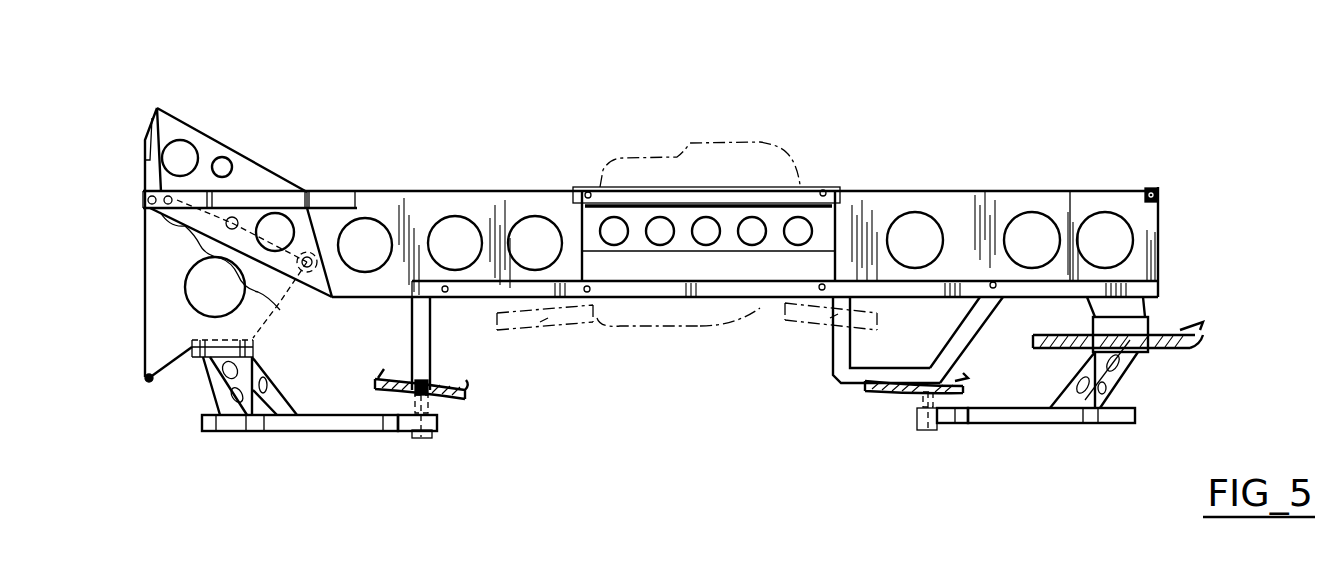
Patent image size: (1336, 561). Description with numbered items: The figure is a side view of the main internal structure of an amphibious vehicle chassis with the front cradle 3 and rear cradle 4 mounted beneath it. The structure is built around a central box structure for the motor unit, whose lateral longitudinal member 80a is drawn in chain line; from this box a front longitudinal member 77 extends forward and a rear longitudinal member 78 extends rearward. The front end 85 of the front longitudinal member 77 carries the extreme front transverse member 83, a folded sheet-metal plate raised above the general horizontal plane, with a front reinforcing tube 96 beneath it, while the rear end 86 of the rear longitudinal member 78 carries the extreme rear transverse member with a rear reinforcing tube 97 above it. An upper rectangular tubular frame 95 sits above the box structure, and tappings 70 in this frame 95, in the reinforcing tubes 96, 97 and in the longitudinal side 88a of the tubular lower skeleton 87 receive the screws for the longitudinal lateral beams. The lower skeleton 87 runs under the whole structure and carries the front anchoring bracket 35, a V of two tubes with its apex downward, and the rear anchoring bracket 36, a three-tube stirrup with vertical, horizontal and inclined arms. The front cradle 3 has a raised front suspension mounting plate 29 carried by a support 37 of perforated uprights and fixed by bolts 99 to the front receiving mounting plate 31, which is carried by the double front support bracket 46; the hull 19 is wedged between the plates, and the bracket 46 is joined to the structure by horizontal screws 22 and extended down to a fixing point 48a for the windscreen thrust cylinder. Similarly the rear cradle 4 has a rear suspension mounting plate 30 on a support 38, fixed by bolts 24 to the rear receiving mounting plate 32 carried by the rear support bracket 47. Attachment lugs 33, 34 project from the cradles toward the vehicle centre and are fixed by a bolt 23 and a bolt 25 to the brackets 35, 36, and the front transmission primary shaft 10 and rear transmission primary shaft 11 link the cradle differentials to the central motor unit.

The front cradle 3 is at (330, 425).
The rear cradle 4 is at (1025, 425).
The front transmission primary shaft 10 is at (540, 323).
The rear transmission primary shaft 11 is at (818, 315).
The hull 19 is at (300, 300).
The horizontal screws 22 is at (143, 193).
The bolt 23 is at (423, 437).
The bolts 24 is at (1127, 350).
The bolt 25 is at (928, 433).
The front suspension mounting plate 29 is at (197, 357).
The rear suspension mounting plate 30 is at (1200, 343).
The front receiving mounting plate 31 is at (203, 327).
The rear receiving mounting plate 32 is at (1160, 296).
The attachment lug 33 is at (410, 430).
The attachment lug 34 is at (948, 425).
The front anchoring bracket 35 is at (418, 362).
The rear anchoring bracket 36 is at (840, 360).
The support 37 is at (232, 365).
The support 38 is at (1120, 373).
The front support bracket 46 is at (158, 263).
The rear support bracket 47 is at (1158, 242).
The fixing point 48a is at (147, 377).
The tappings 70 is at (445, 292).
The front longitudinal member 77 is at (492, 212).
The rear longitudinal member 78 is at (1000, 207).
The lateral longitudinal member 80a is at (728, 212).
The extreme front transverse member 83 is at (147, 157).
The front end 85 is at (245, 178).
The rear end 86 is at (1158, 215).
The tubular lower skeleton 87 is at (745, 300).
The longitudinal side 88a is at (690, 330).
The upper rectangular tubular frame 95 is at (647, 194).
The front reinforcing tube 96 is at (147, 208).
The rear reinforcing tube 97 is at (1160, 187).
The bolts 99 is at (210, 358).